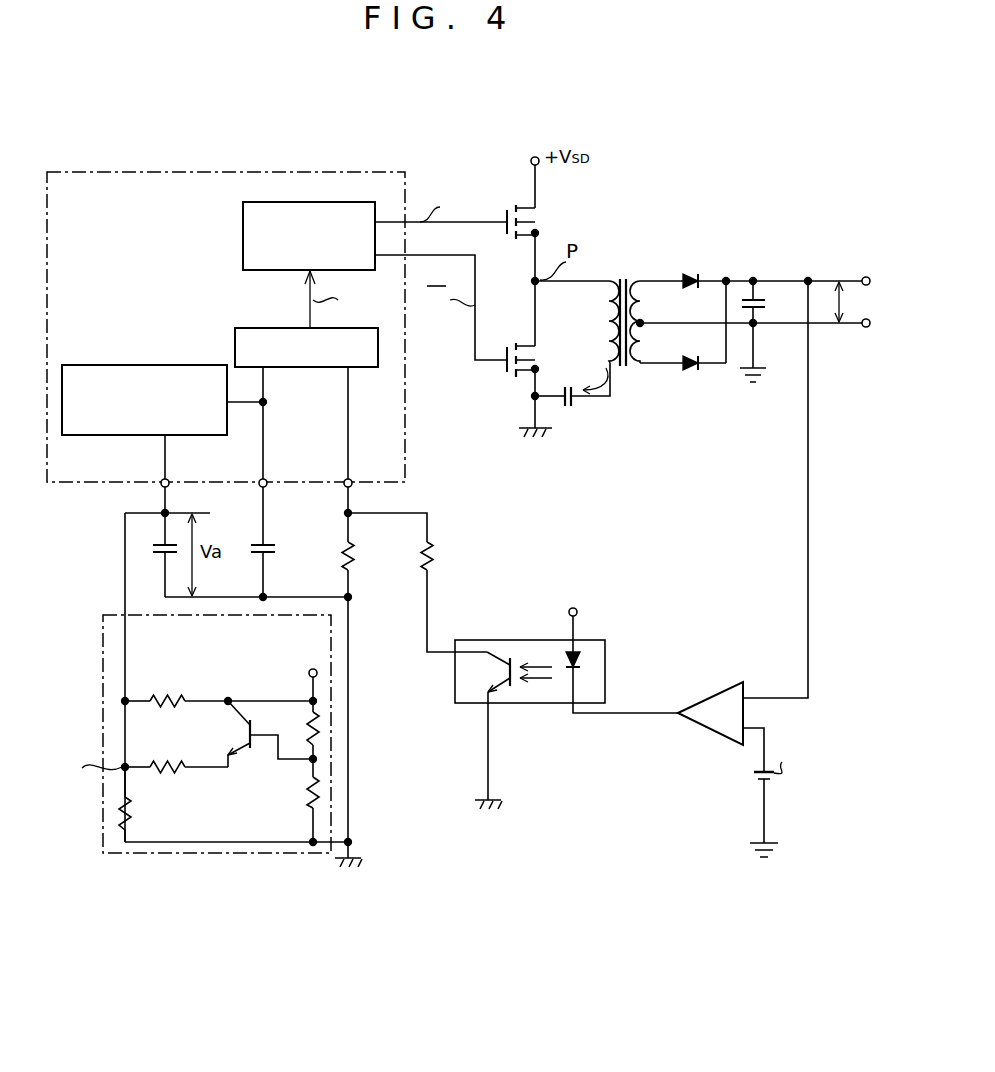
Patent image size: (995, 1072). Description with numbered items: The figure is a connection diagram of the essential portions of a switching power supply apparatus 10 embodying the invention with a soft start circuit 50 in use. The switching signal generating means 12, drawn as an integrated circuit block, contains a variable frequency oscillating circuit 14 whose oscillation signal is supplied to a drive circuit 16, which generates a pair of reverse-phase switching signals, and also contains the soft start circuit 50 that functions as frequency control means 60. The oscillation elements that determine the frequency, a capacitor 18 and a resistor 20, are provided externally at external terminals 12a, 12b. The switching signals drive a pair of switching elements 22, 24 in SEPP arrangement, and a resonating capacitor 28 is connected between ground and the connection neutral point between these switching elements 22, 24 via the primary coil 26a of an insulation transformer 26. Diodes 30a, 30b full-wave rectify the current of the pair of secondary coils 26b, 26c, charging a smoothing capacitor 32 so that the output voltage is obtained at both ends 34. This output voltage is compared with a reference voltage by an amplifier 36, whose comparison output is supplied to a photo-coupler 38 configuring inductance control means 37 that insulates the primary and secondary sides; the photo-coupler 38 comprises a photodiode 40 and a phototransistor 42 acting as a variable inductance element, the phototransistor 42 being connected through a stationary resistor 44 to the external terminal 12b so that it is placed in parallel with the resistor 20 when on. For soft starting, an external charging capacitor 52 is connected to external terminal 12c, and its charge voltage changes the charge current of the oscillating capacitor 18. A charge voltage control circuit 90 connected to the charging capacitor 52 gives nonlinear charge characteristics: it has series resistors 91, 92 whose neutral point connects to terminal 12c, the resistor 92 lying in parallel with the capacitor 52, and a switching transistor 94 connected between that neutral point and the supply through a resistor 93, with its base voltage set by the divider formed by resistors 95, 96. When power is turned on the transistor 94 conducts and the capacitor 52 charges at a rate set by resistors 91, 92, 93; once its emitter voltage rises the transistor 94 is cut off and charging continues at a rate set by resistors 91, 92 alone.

The switching power supply apparatus 10 is at (707, 159).
The switching signal generating means 12 is at (202, 166).
The external terminal 12a is at (268, 480).
The external terminal 12b is at (353, 480).
The external terminal 12c is at (170, 480).
The variable frequency oscillating circuit 14 is at (265, 328).
The drive circuit 16 is at (243, 236).
The capacitor 18 is at (254, 553).
The resistor 20 is at (349, 546).
The switching element 22 is at (538, 214).
The switching element 24 is at (505, 373).
The insulation transformer 26 is at (632, 334).
The primary coil 26a is at (612, 330).
The secondary coil 26b is at (645, 292).
The secondary coil 26c is at (630, 367).
The resonating capacitor 28 is at (566, 386).
The diode 30a is at (697, 280).
The diode 30b is at (690, 368).
The smoothing capacitor 32 is at (760, 300).
The both ends 34 is at (882, 272).
The amplifier 36 is at (714, 692).
The inductance control means 37 is at (385, 635).
The photo-coupler 38 is at (566, 695).
The photodiode 40 is at (580, 655).
The phototransistor 42 is at (500, 652).
The stationary resistor 44 is at (429, 546).
The soft start circuit 50 is at (143, 365).
The charging capacitor 52 is at (158, 553).
The frequency control means 60 is at (248, 428).
The charge voltage control circuit 90 is at (216, 858).
The resistor 91 is at (178, 700).
The resistor 92 is at (133, 822).
The resistor 93 is at (178, 766).
The switching transistor 94 is at (239, 751).
The resistor 95 is at (320, 735).
The resistor 96 is at (320, 800).